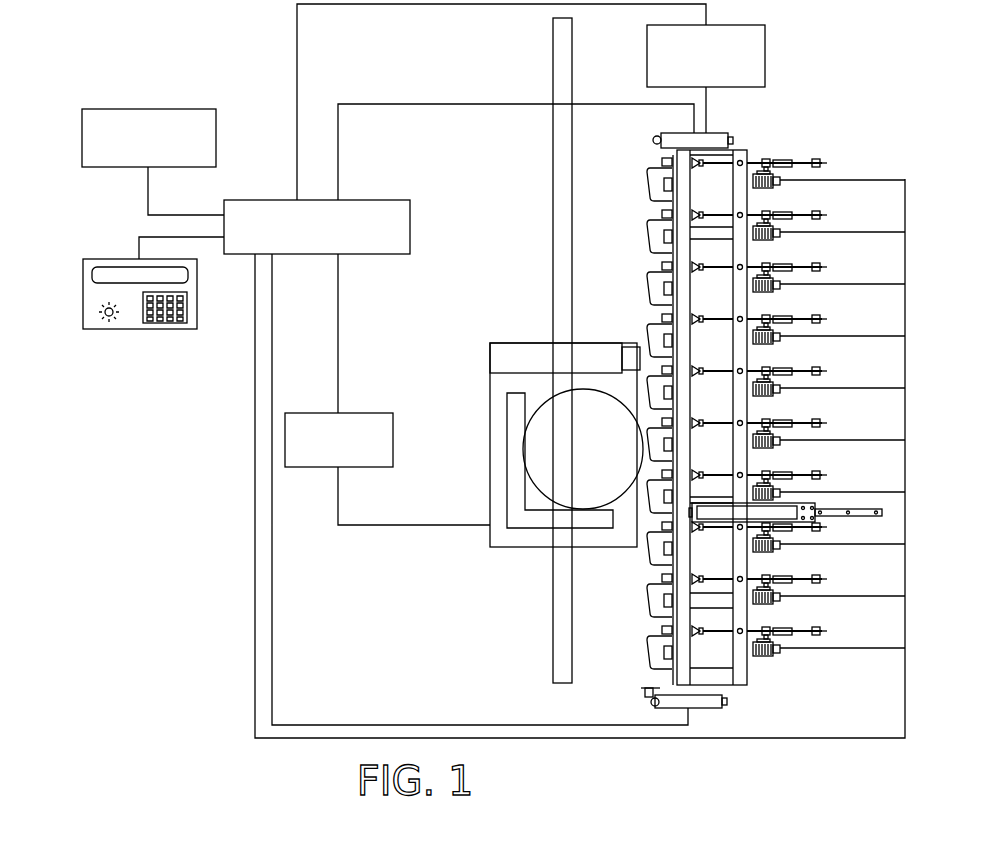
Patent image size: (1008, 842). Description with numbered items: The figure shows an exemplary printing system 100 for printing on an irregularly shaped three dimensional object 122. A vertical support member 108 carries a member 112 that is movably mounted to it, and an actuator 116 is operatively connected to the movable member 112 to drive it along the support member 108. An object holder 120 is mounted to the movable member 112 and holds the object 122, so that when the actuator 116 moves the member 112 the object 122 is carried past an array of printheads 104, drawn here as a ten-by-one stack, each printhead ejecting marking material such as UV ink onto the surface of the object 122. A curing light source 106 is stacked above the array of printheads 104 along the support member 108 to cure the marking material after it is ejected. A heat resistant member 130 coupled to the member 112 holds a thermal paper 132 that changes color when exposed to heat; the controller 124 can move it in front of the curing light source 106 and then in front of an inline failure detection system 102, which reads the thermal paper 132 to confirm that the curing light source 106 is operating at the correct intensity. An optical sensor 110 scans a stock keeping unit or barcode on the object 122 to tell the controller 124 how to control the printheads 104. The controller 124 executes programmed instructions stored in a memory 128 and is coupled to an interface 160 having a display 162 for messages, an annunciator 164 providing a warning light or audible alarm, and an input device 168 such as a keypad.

The printing system 100 is at (163, 36).
The inline failure detection (IFD) system 102 is at (765, 47).
The array of printheads 104 is at (628, 256).
The curing light source 106 is at (717, 133).
The support member 108 is at (553, 607).
The optical sensor 110 is at (723, 707).
The member 112 is at (526, 410).
The actuator 116 is at (369, 413).
The object holder 120 is at (505, 430).
The object 122 is at (547, 402).
The controller 124 is at (360, 254).
The memory 128 is at (82, 136).
The heat resistant member 130 is at (593, 343).
The thermal paper 132 is at (633, 346).
The interface 160 is at (145, 303).
The display 162 is at (112, 267).
The annunciator 164 is at (102, 314).
The input device 168 is at (173, 323).